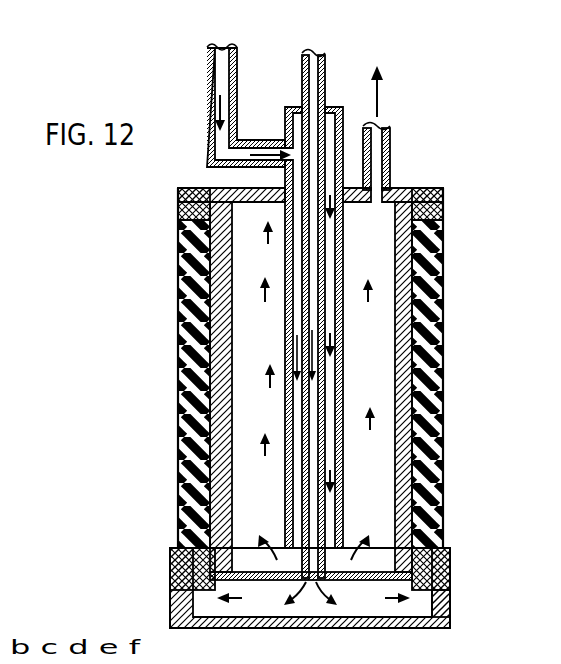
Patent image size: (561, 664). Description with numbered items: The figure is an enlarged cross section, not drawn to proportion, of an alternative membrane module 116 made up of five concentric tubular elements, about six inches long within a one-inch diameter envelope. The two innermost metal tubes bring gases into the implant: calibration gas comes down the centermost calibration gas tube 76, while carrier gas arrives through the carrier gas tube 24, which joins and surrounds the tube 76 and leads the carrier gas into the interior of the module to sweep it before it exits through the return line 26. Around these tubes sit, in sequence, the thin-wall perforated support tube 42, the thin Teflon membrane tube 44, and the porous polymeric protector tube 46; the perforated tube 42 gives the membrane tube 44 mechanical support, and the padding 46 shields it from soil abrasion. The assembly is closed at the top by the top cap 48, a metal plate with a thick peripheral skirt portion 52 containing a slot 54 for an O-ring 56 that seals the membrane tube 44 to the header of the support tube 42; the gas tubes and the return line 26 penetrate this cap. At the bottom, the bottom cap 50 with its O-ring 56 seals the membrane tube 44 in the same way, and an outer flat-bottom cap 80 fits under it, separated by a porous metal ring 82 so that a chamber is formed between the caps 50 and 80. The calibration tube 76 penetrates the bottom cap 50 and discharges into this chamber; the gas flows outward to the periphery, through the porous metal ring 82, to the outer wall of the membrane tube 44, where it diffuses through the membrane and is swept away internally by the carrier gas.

The carrier gas tube 24 is at (207, 56).
The return line 26 is at (386, 130).
The support tube 42 is at (445, 268).
The membrane tube 44 is at (445, 420).
The protector tube 46 is at (445, 445).
The top cap 48 is at (418, 190).
The bottom cap 50 is at (366, 581).
The peripheral skirt portion 52 is at (450, 563).
The slot 54 is at (443, 217).
The O-ring 56 is at (178, 206).
The calibration gas tube 76 is at (326, 68).
The flat-bottom cap 80 is at (412, 630).
The porous metal ring 82 is at (447, 590).
The membrane module 116 is at (456, 351).